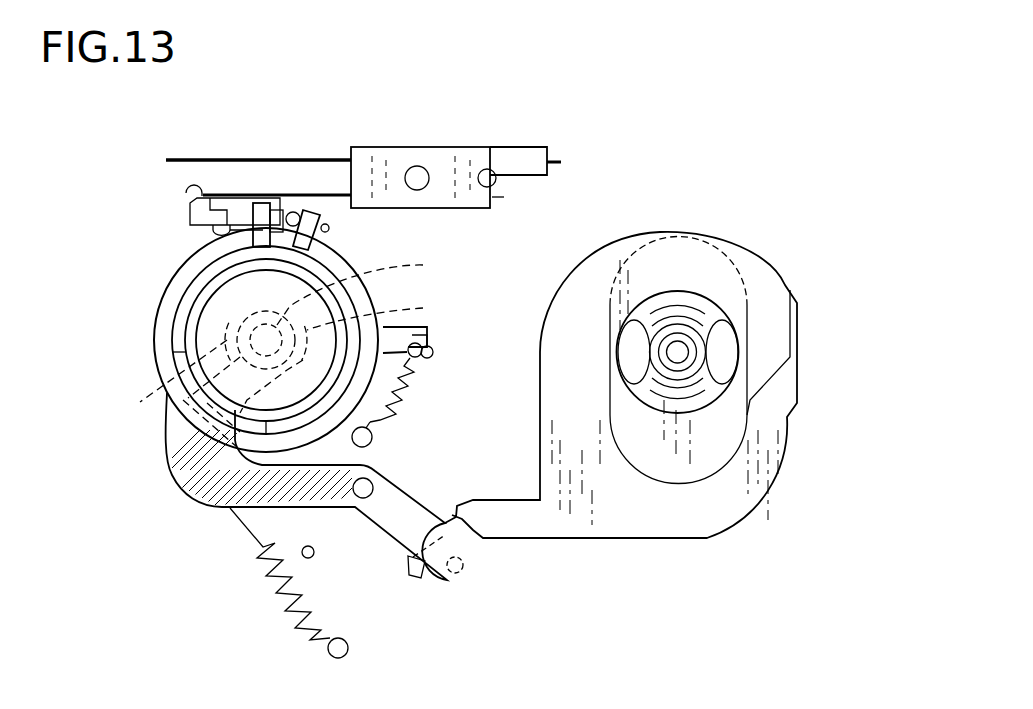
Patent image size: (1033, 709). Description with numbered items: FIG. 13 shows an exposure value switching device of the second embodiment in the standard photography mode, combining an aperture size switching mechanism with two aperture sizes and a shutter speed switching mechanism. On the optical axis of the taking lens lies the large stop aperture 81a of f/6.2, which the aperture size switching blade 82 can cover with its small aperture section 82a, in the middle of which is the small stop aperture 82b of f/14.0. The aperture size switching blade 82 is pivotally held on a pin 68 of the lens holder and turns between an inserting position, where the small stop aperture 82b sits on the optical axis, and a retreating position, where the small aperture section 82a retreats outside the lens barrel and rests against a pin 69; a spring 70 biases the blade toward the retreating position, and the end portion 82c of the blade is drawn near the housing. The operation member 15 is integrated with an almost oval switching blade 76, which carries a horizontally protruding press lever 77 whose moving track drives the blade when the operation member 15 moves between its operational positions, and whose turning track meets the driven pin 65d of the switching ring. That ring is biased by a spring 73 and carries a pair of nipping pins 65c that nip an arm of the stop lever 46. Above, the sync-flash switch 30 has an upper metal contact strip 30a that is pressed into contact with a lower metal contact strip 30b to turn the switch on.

The operation member 15 is at (652, 297).
The sync-flash switch 30 is at (420, 135).
The upper metal contact strip 30a is at (338, 157).
The lower metal contact strip 30b is at (337, 208).
The stop lever 46 is at (247, 185).
The nipping pins 65c is at (312, 213).
The driven pin 65d is at (433, 353).
The pin 68 is at (372, 482).
The pin 69 is at (314, 553).
The spring 70 is at (270, 575).
The spring 73 is at (402, 403).
The switching blade 76 is at (636, 510).
The press lever 77 is at (423, 578).
The large stop aperture 81a is at (167, 397).
The aperture size switching blade 82 is at (165, 487).
The small aperture section 82a is at (386, 313).
The small stop aperture 82b is at (371, 288).
The lever end portion 82c is at (462, 572).